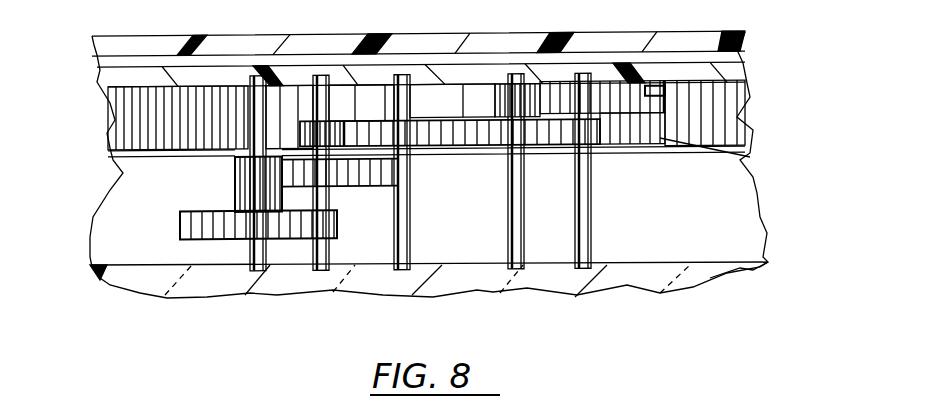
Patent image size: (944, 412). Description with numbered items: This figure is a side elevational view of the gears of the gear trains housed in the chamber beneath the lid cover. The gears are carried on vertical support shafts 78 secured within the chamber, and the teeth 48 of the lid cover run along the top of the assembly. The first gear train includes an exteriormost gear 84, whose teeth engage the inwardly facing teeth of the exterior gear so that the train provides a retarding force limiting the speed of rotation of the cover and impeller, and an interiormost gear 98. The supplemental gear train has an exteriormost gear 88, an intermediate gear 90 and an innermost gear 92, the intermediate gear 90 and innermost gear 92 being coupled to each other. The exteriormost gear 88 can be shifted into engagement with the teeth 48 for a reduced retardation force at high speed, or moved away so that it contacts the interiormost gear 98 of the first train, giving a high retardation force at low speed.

The teeth 48 is at (464, 164).
The vertical support shafts 78 is at (146, 174).
The exteriormost gear 84 is at (691, 121).
The exteriormost gear 88 is at (450, 205).
The interiormost gear 98 is at (606, 213).
The intermediate gear 90 is at (318, 213).
The innermost gear 92 is at (200, 244).